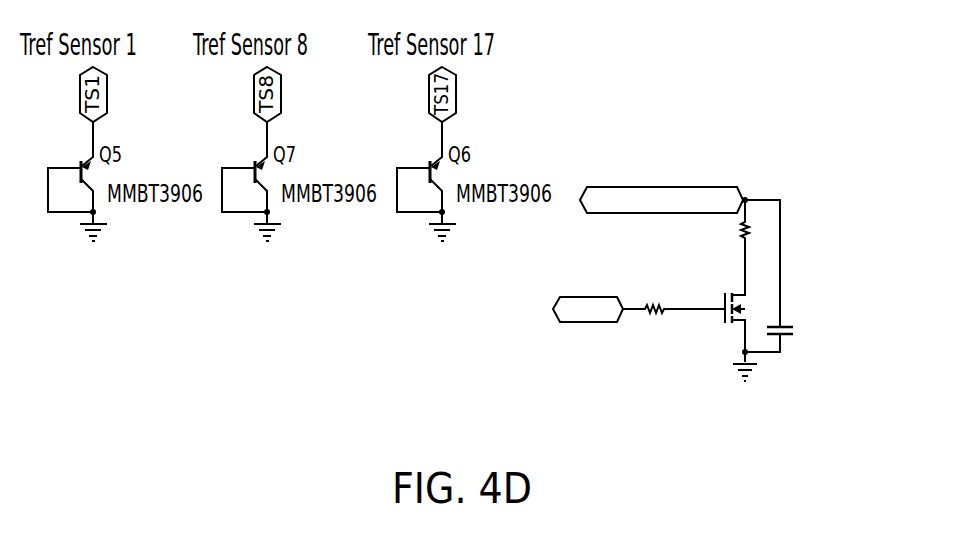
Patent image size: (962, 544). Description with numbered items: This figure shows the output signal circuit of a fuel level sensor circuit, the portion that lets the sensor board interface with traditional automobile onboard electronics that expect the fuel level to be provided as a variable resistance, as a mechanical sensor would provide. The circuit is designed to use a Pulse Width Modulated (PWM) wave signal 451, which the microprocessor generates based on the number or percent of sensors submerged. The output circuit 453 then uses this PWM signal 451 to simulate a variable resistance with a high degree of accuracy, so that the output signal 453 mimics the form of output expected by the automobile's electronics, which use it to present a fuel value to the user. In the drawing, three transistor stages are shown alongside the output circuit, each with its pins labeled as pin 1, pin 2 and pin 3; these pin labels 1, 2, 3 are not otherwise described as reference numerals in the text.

The transistor emitter pin 1 is at (251, 146).
The transistor base pin 2 is at (244, 177).
The transistor collector pin 3 is at (259, 210).
The Pulse Width Modulated (PWM) wave signal 451 is at (576, 296).
The output signal circuit 453 is at (662, 186).